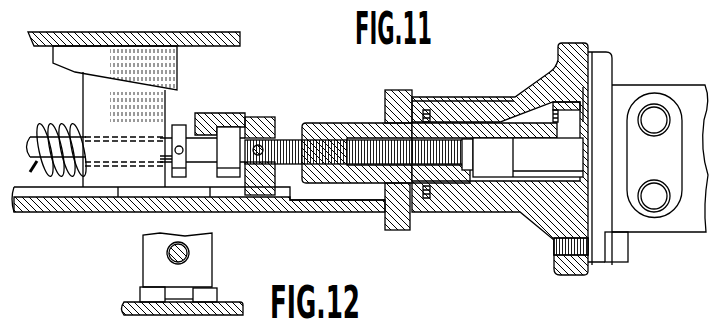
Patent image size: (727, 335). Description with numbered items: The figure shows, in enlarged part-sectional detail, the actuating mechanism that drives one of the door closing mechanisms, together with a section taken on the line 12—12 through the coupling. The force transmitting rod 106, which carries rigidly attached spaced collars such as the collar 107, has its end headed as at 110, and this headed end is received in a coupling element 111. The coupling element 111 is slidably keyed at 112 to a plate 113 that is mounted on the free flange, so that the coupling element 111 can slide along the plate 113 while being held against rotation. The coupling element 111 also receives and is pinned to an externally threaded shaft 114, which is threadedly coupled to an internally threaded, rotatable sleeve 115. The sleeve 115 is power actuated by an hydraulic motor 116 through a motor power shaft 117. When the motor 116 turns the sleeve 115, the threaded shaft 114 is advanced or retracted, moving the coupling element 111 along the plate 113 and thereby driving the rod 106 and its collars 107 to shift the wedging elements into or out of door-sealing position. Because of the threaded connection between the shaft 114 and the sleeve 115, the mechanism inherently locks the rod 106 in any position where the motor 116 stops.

In FIG. 11, the force transmitting rod 106 is at (51, 138).
In FIG. 11, the collar 107 is at (181, 124).
In FIG. 11, the headed end of rod 110 is at (236, 145).
In FIG. 11, the coupling element 111 is at (219, 128).
In FIG. 12, the coupling element 111 is at (157, 265).
In FIG. 12, the key 112 is at (181, 291).
In FIG. 11, the plate 113 is at (50, 188).
In FIG. 12, the plate 113 is at (140, 295).
In FIG. 12, the externally threaded shaft 114 is at (167, 249).
In FIG. 11, the internally threaded rotatable sleeve 115 is at (373, 182).
In FIG. 11, the hydraulic motor 116 is at (688, 93).
In FIG. 11, the motor power shaft 117 is at (590, 158).
In FIG. 11, the section line 12— 12 is at (293, 137).